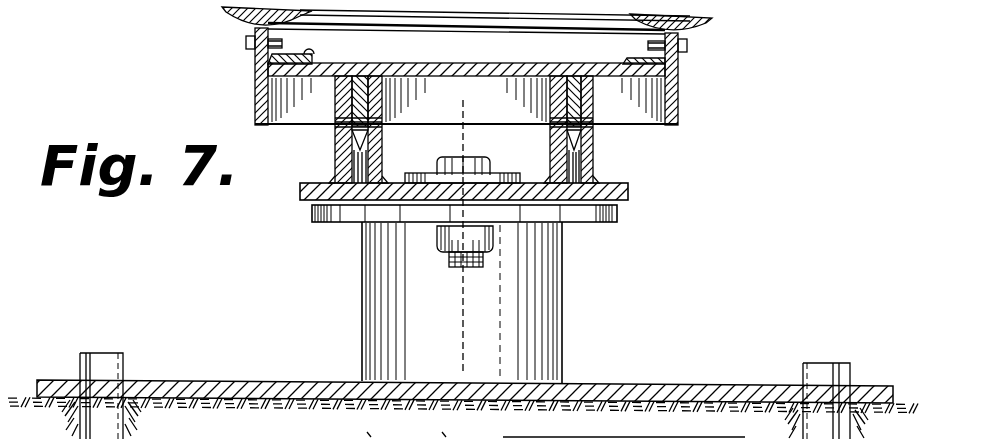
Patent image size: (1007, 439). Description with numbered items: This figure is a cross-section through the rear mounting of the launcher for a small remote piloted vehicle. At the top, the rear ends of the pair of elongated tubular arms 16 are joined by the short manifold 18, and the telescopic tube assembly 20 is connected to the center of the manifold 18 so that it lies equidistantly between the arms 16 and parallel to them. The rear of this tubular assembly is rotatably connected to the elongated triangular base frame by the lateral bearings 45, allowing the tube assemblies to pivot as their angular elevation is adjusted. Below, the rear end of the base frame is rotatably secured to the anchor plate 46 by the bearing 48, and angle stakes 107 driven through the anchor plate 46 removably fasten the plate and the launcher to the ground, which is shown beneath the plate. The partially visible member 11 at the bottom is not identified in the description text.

The elongated tubular arms 16 is at (237, 24).
The manifold 18 is at (545, 20).
The telescopic tube assembly 20 is at (468, 26).
The lateral bearings 45 is at (342, 125).
The bearing 48 is at (421, 233).
The anchor plate 46 is at (720, 390).
The angle stakes 107 is at (107, 368).
The foundation member 11 is at (578, 425).